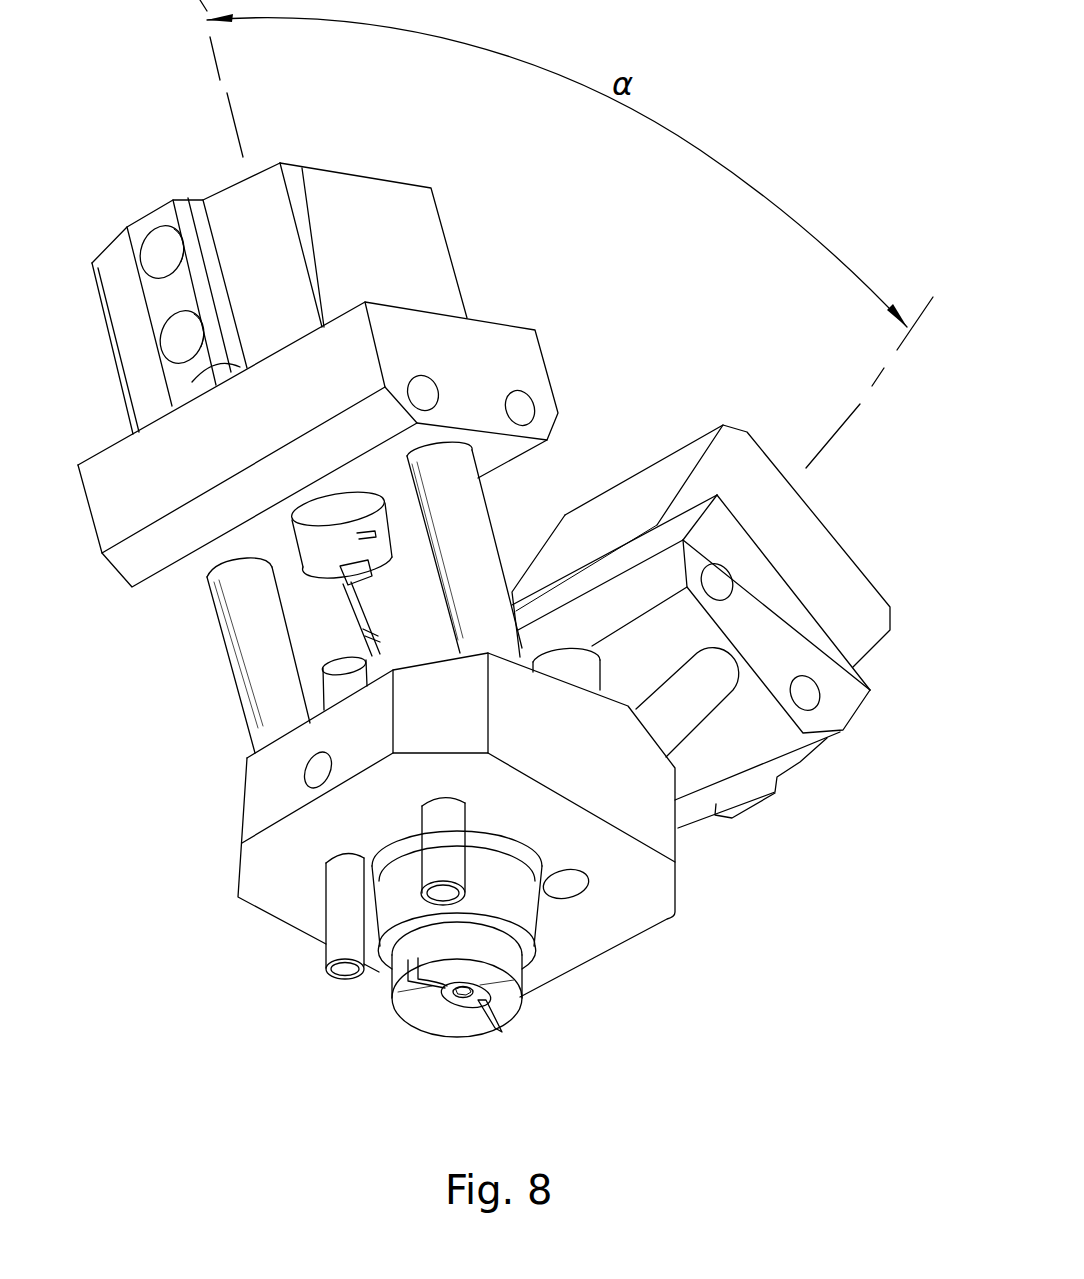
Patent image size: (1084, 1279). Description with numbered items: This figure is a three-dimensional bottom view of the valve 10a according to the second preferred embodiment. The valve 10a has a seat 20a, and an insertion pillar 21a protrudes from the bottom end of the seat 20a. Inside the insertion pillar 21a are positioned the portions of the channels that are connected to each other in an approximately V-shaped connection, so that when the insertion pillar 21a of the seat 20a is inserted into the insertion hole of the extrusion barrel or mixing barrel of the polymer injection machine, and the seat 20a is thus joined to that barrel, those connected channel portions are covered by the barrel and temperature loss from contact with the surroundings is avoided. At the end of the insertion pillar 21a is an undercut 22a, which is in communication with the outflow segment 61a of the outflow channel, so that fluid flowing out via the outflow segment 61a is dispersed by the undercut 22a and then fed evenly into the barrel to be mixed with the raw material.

The valve 10a is at (140, 186).
The seat 20a is at (243, 790).
The insertion pillar 21a is at (510, 957).
The undercut 22a is at (498, 1030).
The outflow segment 61a is at (460, 992).